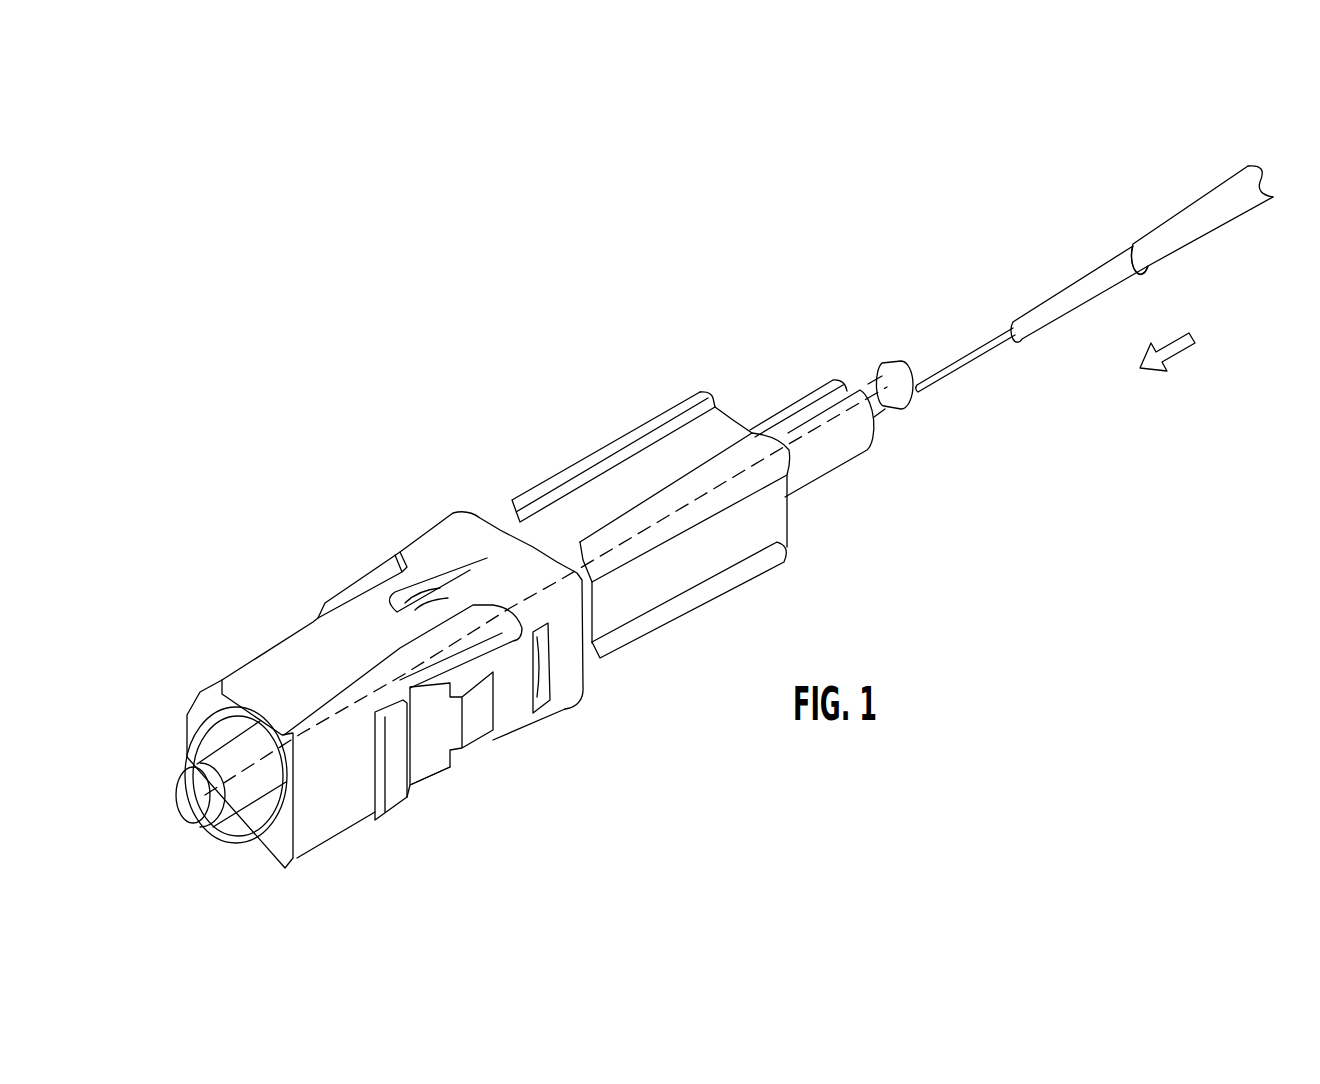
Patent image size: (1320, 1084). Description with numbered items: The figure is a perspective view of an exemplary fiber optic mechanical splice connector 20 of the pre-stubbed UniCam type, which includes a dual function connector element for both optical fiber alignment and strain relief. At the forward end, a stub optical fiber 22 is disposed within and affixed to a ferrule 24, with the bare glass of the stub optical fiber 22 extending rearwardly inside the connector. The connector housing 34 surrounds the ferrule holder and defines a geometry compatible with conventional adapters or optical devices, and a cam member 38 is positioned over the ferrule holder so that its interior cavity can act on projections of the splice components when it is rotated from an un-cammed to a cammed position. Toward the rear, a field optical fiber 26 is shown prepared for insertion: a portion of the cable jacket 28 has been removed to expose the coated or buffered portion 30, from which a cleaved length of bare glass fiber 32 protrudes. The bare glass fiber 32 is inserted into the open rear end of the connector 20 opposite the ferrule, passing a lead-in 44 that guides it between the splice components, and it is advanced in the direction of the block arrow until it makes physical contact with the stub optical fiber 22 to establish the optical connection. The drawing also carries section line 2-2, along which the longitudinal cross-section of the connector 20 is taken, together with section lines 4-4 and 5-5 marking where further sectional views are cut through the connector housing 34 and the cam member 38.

The fiber optic mechanical splice connector 20 is at (307, 458).
The stub optical fiber 22 is at (196, 812).
The ferrule 24 is at (234, 805).
The field optical fiber 26 is at (1180, 258).
The cable jacket 28 is at (1237, 177).
The coated or buffered portion 30 is at (1023, 312).
The bare glass fiber 32 is at (956, 355).
The connector housing 34 is at (240, 663).
The cam member 38 is at (778, 560).
The lead-in 44 is at (888, 413).
The section line 2- 2 is at (918, 369).
The section line 4- 4 is at (503, 553).
The section line 5- 5 is at (693, 443).